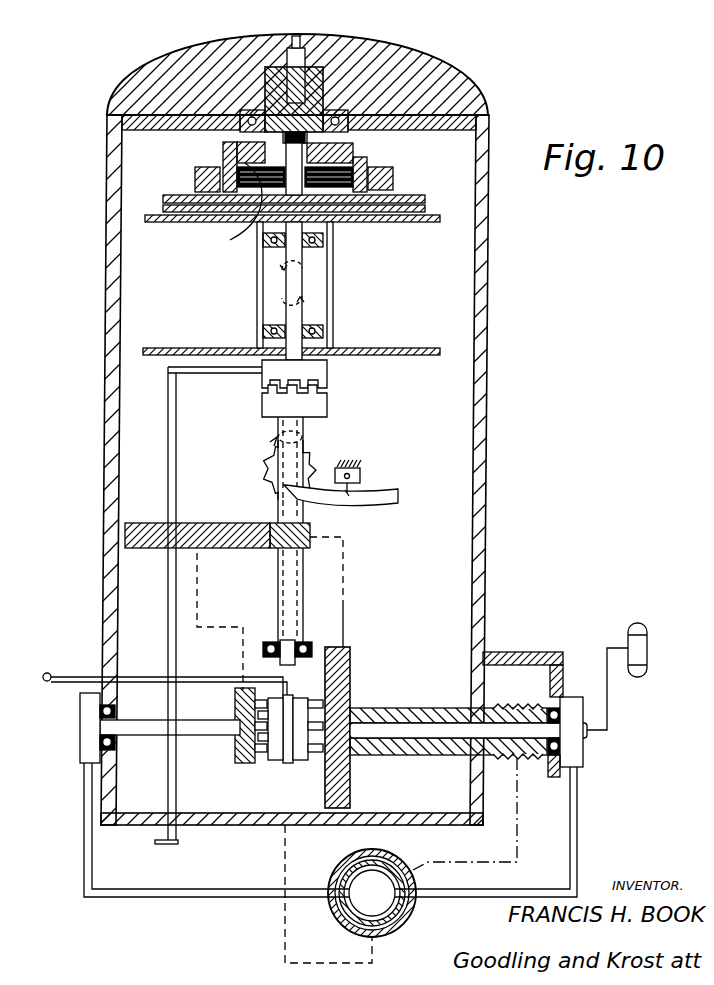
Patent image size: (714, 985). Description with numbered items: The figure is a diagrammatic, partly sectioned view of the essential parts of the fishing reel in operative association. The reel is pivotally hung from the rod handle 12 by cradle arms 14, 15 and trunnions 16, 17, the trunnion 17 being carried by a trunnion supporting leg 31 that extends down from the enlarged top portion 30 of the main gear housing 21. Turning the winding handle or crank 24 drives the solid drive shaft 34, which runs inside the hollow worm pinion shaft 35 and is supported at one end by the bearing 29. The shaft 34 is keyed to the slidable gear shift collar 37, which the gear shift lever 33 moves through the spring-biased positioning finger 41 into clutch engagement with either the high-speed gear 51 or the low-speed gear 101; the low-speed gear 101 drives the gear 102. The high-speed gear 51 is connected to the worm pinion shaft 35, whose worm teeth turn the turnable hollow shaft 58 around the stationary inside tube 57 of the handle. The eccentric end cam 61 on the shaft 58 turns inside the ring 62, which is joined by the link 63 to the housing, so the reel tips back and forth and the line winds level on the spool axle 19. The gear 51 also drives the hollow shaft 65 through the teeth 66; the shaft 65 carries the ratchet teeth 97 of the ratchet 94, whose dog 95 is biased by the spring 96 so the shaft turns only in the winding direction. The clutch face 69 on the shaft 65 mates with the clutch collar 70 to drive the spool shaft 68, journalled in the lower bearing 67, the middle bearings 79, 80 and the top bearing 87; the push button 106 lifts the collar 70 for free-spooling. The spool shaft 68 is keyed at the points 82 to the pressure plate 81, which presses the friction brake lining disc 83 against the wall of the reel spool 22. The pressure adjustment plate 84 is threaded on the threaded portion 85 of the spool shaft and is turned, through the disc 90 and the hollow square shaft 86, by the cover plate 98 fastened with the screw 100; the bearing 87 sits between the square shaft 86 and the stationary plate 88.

The rod handle 12 is at (349, 898).
The cradle arm 14 is at (84, 868).
The cradle arm 15 is at (578, 800).
The trunnion 16 is at (80, 747).
The trunnion 17 is at (573, 697).
The spool axle 19 is at (333, 278).
The main gear housing 21 is at (197, 825).
The reel spool 22 is at (440, 222).
The winding handle or crank 24 is at (636, 623).
The bearing 29 is at (115, 745).
The top portion of main gear housing 30 is at (518, 652).
The trunnion supporting leg 31 is at (552, 778).
The gear shift lever 33 is at (44, 680).
The solid drive shaft 34 is at (385, 713).
The worm pinion shaft 35 is at (441, 723).
The gear shift collar 37 is at (275, 762).
The positioning shifting finger 41 is at (292, 698).
The high-speed gear 51 is at (350, 673).
The stationary inside tube 57 is at (352, 926).
The turnable hollow shaft 58 is at (346, 868).
The eccentric end cam 61 is at (404, 858).
The ring 62 is at (370, 850).
The link 63 is at (285, 922).
The hollow shaft 65 is at (303, 590).
The teeth on hollow shaft 66 is at (276, 525).
The lower bearing 67 is at (305, 642).
The spool shaft 68 is at (285, 290).
The clutch face 69 is at (327, 405).
The clutch collar 70 is at (327, 380).
The middle bearing 79 is at (323, 332).
The middle bearing 80 is at (323, 240).
The pressure plate 81 is at (425, 198).
The circumferential engaging points 82 is at (230, 240).
The friction brake lining disc 83 is at (425, 209).
The pressure adjustment plate 84 is at (394, 178).
The threaded portion of spool shaft 85 is at (240, 160).
The hollow square shaft 86 is at (322, 70).
The top bearing 87 is at (348, 127).
The stationary plate 88 is at (437, 131).
The disc 90 is at (363, 160).
The ratchet 94 is at (372, 488).
The dog 95 is at (382, 505).
The spring 96 is at (336, 478).
The ratchet teeth 97 is at (272, 460).
The cover plate 98 is at (222, 50).
The screw 100 is at (312, 45).
The low-speed gear 101 is at (235, 755).
The gear 102 is at (226, 523).
The push button 106 is at (155, 842).